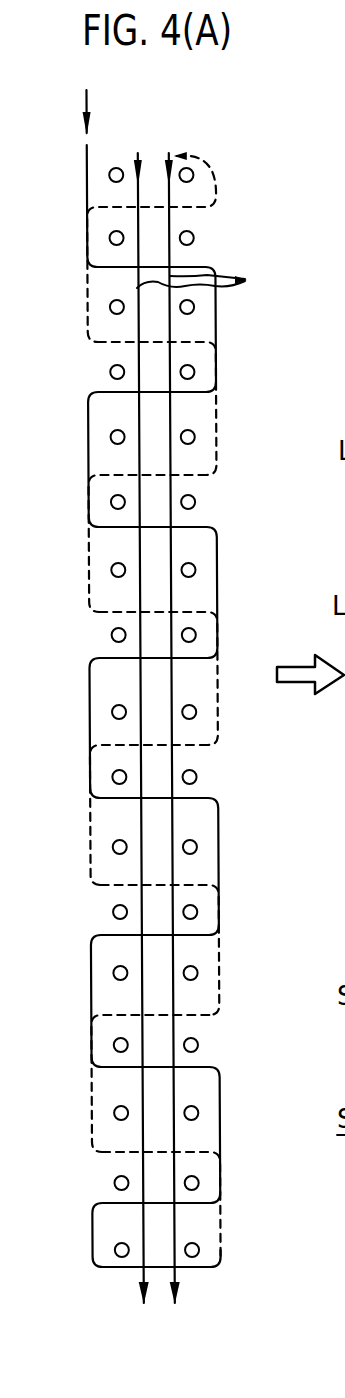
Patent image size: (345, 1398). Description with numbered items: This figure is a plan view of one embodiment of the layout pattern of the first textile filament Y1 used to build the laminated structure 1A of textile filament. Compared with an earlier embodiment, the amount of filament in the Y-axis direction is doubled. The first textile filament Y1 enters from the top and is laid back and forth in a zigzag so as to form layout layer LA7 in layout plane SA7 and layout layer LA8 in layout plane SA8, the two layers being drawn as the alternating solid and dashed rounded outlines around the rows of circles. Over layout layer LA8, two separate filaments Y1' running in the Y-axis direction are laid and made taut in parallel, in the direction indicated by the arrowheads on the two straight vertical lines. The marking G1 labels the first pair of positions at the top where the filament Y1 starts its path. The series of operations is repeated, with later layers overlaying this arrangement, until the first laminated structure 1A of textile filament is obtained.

The first textile filament Y1 is at (59, 141).
The first group of holes G1 is at (104, 182).
The separate filaments Y1' is at (214, 281).
The layout layer LA7 is at (76, 420).
The layout layer LA8 is at (80, 563).
The laminated structure of textile filament 1A is at (84, 725).
The layout plane SA7 is at (80, 963).
The layout plane SA8 is at (80, 1089).